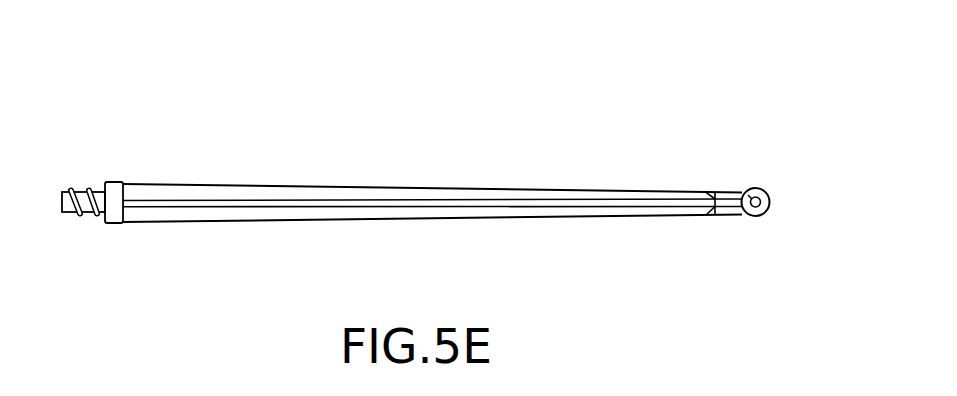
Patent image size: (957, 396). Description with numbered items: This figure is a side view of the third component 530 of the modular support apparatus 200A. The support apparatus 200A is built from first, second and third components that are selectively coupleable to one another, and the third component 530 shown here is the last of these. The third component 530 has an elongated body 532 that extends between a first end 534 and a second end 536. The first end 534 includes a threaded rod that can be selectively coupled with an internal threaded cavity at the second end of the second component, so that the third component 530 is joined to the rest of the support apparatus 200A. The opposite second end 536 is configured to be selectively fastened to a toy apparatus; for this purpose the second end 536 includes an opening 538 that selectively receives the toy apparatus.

The support apparatus 200A is at (405, 166).
The third component 530 is at (405, 192).
The body 532 is at (263, 221).
The first end 534 is at (67, 213).
The second end 536 is at (745, 214).
The opening 538 is at (754, 189).